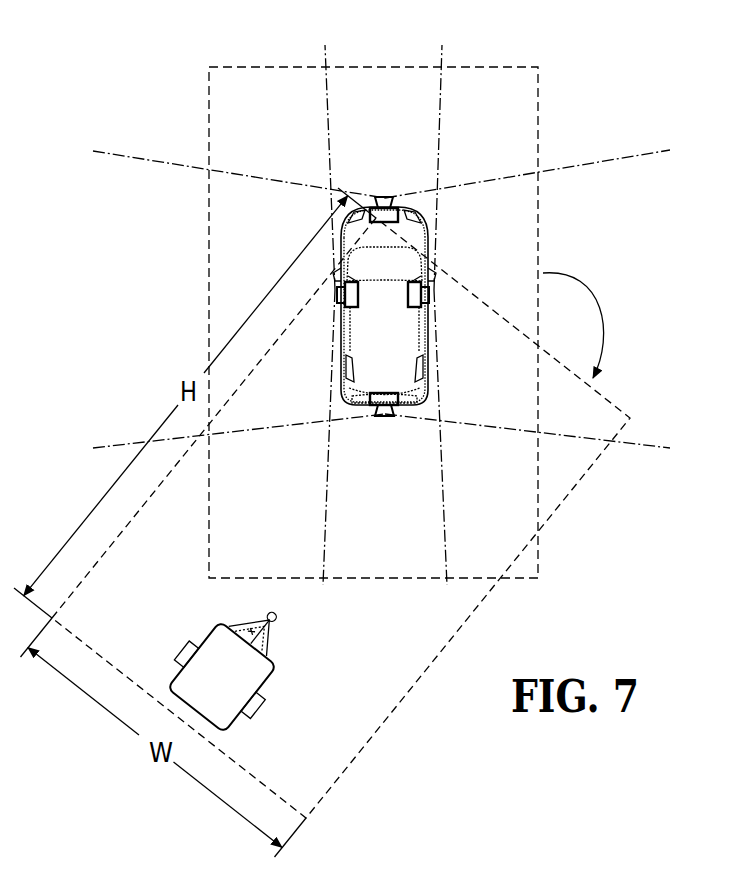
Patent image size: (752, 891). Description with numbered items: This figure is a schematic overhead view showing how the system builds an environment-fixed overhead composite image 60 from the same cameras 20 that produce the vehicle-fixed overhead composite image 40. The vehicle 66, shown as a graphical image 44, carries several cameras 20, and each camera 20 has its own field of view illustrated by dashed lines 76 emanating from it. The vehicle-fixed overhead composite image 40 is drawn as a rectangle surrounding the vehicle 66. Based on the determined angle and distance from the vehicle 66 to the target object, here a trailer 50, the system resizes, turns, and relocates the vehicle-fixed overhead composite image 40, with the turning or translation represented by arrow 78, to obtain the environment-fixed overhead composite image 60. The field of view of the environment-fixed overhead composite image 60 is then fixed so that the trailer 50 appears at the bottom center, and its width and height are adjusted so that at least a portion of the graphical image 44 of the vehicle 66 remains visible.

The camera 20 is at (386, 199).
The vehicle-fixed overhead composite image 40 is at (487, 67).
The graphical image representing the vehicle 44 is at (425, 306).
The vehicle 66 is at (385, 328).
The trailer 50 is at (275, 690).
The environment-fixed overhead composite image 60 is at (595, 470).
The dashed lines 76 is at (650, 152).
The arrow 78 is at (594, 306).